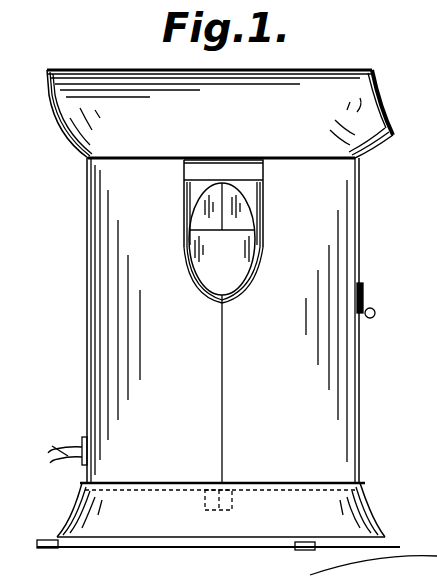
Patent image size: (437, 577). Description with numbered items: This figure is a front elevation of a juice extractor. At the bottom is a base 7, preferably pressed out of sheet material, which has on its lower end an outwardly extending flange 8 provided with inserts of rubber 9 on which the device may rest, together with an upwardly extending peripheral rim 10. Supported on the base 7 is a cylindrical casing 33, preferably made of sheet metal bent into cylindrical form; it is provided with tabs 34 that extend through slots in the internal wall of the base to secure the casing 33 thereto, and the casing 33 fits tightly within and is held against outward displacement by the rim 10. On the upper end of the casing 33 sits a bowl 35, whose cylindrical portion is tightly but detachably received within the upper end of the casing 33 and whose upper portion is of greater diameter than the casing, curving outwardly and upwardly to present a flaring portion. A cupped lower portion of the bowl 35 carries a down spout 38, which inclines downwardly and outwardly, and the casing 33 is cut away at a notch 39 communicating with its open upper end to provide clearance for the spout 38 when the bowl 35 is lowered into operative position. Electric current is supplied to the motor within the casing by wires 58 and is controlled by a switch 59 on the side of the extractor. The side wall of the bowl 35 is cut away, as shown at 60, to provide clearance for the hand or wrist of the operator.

The base 7 is at (366, 522).
The outwardly extending flange 8 is at (392, 548).
The inserts of rubber 9 is at (303, 551).
The peripheral rim 10 is at (362, 486).
The cylindrical casing 33 is at (97, 258).
The tabs 34 is at (210, 505).
The bowl 35 is at (85, 128).
The down spout 38 is at (211, 276).
The notch 39 is at (258, 238).
The wires 58 is at (63, 448).
The switch 59 is at (376, 311).
The cut-away of bowl side wall 60 is at (380, 100).